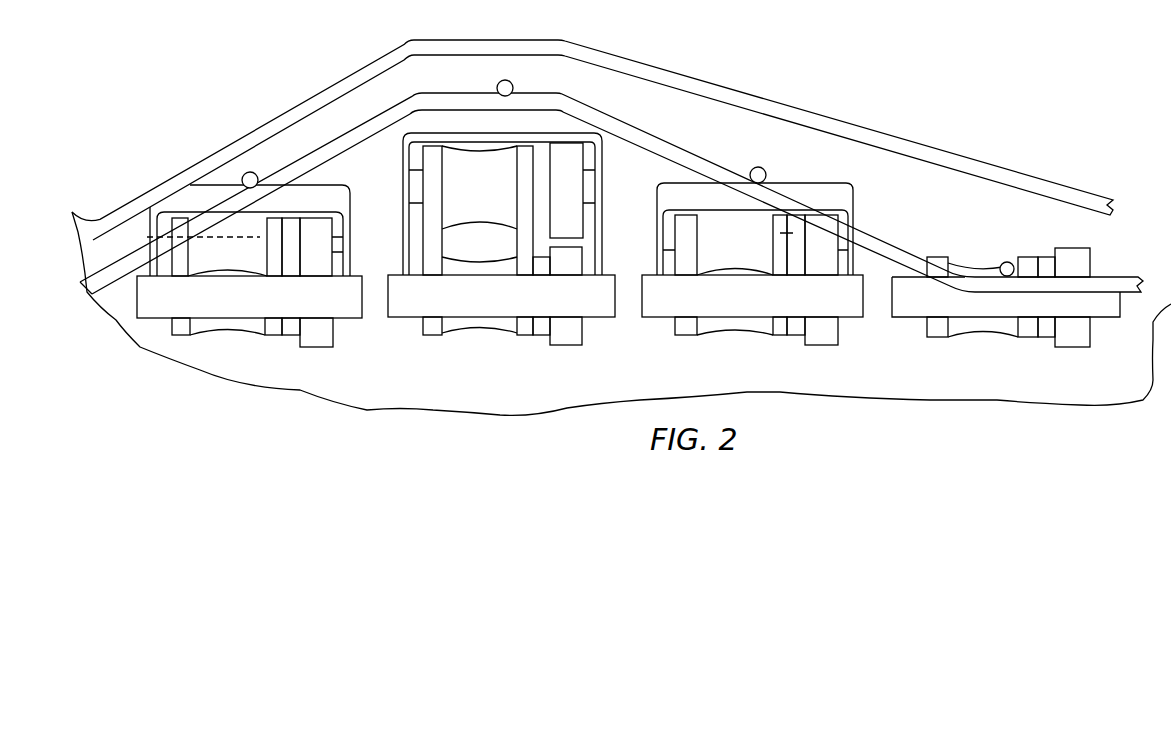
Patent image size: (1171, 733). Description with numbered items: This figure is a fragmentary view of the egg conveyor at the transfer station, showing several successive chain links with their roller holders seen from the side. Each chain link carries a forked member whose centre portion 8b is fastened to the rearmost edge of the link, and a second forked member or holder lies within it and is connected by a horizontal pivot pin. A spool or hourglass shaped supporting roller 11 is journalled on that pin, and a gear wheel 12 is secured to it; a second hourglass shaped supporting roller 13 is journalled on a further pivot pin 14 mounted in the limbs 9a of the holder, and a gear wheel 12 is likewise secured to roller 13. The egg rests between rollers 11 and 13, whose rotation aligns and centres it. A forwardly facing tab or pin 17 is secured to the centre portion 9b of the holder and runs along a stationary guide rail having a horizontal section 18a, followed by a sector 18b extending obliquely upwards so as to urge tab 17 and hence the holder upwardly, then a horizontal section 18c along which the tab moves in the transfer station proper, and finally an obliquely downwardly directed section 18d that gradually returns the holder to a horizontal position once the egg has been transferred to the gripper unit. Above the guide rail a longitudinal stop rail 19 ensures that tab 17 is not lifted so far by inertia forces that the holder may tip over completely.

The centre portion 8b is at (403, 308).
The limbs 9a is at (405, 210).
The centre portion 9b is at (475, 123).
The supporting roller 11 is at (478, 323).
The gear wheel 12 is at (1073, 347).
The second supporting roller 13 is at (475, 212).
The pivot pin 14 is at (588, 183).
The tab 17 is at (497, 85).
The horizontal section 18a is at (1132, 277).
The obliquely upward sector 18b is at (890, 248).
The horizontal section 18c is at (537, 98).
The obliquely downward section 18d is at (347, 145).
The stop rail 19 is at (903, 133).